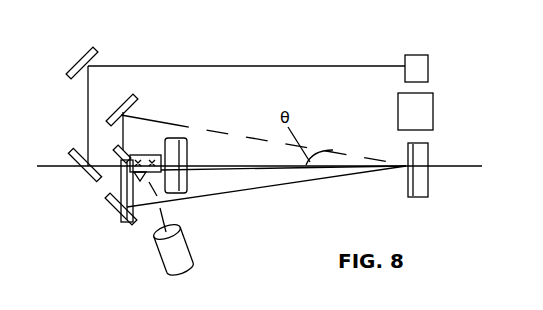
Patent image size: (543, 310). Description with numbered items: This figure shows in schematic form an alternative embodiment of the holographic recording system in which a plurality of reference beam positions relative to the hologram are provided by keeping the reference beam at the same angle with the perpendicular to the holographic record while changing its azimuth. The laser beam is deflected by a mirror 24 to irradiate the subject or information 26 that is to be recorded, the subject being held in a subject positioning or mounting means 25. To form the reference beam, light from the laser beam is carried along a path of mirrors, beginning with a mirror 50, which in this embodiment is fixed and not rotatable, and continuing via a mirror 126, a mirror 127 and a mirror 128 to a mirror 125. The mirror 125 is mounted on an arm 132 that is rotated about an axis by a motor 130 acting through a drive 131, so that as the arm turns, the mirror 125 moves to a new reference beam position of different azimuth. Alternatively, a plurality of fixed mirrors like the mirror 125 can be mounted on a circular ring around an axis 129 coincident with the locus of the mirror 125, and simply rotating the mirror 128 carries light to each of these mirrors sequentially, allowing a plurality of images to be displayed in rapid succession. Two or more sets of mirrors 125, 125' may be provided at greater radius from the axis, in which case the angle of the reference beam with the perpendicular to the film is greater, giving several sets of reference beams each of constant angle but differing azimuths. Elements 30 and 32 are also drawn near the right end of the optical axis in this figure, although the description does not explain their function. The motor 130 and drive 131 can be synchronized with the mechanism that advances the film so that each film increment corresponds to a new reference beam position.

The mirror 24 is at (433, 108).
The subject positioning or mounting means 25 is at (172, 140).
The information 26 is at (187, 155).
The lens 30 is at (405, 185).
The lens element 32 is at (428, 183).
The mirror 50 is at (428, 63).
The mirror 125 is at (107, 234).
The mirror 125' is at (116, 101).
The mirror 126 is at (82, 58).
The mirror 127 is at (85, 173).
The mirror 128 is at (117, 150).
The axis 129 is at (145, 156).
The motor 130 is at (193, 252).
The drive 131 is at (162, 213).
The arm 132 is at (121, 178).